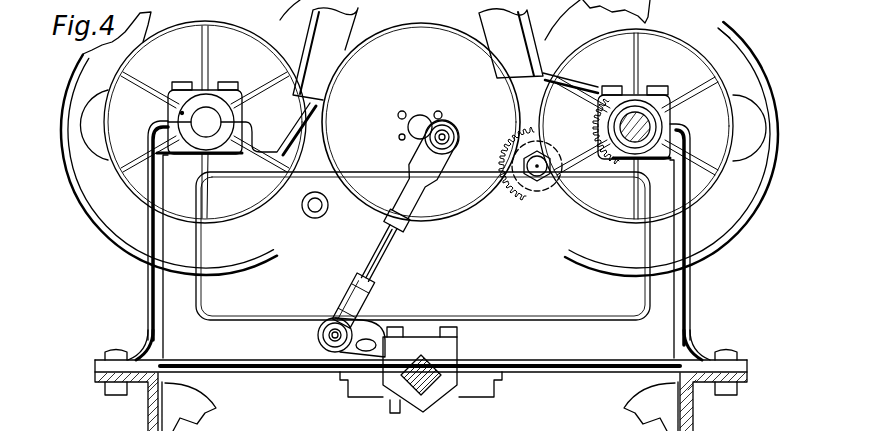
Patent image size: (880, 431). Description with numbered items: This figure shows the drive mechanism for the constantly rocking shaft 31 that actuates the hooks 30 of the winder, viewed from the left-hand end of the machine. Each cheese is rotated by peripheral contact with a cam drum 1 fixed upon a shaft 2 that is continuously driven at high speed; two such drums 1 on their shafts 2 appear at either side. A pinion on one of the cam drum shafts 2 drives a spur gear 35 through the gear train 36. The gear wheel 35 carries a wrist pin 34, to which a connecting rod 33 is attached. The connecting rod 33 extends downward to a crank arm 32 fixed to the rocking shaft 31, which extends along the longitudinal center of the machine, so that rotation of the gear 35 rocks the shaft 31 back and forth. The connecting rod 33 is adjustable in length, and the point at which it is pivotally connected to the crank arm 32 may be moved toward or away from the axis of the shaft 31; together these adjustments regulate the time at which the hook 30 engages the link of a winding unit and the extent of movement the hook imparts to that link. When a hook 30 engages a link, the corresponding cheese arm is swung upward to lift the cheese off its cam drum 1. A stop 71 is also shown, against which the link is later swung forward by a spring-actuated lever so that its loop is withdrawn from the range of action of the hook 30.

The drum 1 is at (121, 68).
The shaft 2 is at (204, 133).
The hook 30 is at (362, 381).
The rocking shaft 31 is at (425, 352).
The crank arm 32 is at (380, 320).
The connecting rod 33 is at (388, 247).
The wrist pin 34 is at (452, 131).
The spur gear 35 is at (450, 219).
The gear train 36 is at (528, 195).
The stop 71 is at (316, 218).